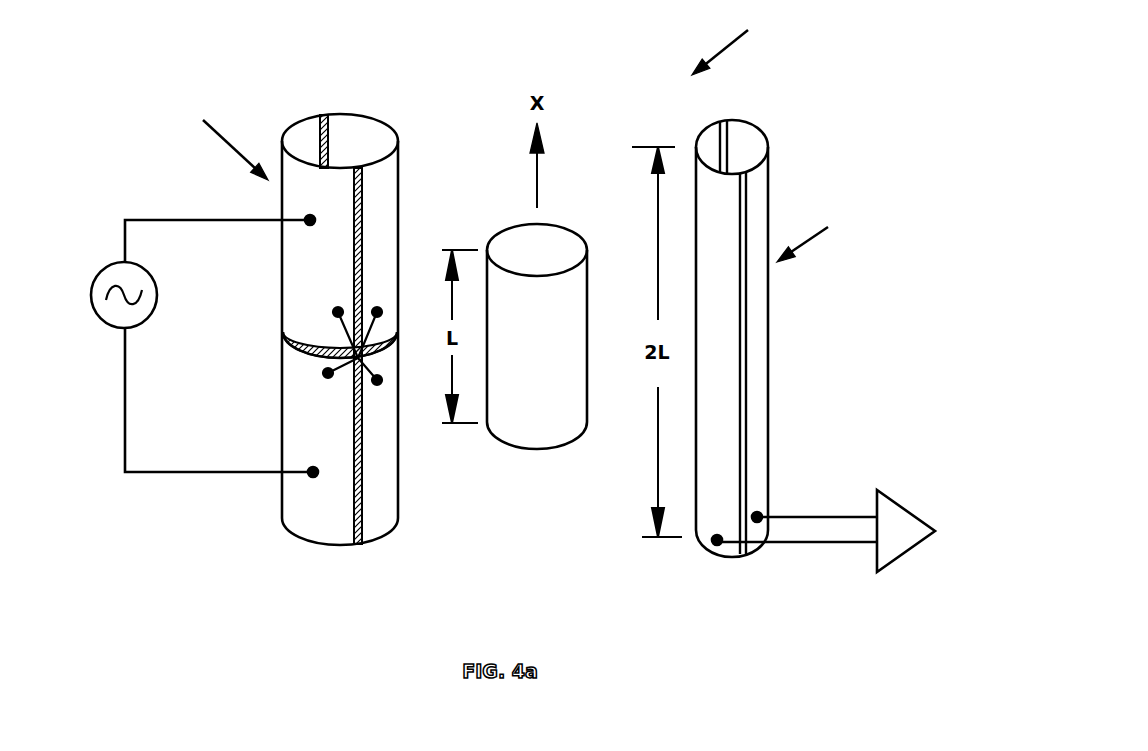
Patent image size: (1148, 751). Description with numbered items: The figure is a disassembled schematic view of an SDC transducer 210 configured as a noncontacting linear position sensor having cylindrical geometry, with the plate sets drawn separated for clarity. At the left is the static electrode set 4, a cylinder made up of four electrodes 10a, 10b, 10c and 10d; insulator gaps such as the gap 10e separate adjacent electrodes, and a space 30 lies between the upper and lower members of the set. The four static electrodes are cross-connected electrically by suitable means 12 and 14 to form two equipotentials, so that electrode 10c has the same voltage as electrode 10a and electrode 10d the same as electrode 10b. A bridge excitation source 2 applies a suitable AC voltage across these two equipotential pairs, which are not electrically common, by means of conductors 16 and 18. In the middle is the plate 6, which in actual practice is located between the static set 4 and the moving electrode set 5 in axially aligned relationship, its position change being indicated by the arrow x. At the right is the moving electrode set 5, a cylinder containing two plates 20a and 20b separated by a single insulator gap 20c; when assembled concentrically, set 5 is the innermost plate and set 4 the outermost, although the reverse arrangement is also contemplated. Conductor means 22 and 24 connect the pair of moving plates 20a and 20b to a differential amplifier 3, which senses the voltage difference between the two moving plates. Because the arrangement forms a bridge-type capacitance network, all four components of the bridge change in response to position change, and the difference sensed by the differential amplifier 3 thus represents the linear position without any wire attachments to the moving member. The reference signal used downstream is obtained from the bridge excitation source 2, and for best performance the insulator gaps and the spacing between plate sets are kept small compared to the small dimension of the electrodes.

The SDC transducer 210 is at (746, 39).
The static electrode set 4 is at (224, 138).
The rectangular element 10a is at (340, 238).
The rectangular element 10b is at (340, 440).
The rectangular element 10c is at (380, 460).
The rectangular element 10d is at (340, 141).
The insulator gap 10e is at (321, 115).
The space between upper and lower members 30 is at (284, 340).
The cross-connecting means 12 is at (308, 356).
The cross-connecting means 14 is at (393, 334).
The conductor 18 is at (213, 218).
The conductor 16 is at (207, 473).
The bridge excitation source 2 is at (147, 322).
The plate 6 is at (537, 336).
The moving electrode set 5 is at (811, 234).
The rectangular element 20a is at (732, 338).
The rectangular element 20b is at (758, 370).
The insulator gap 20c is at (742, 217).
The conductor means 24 is at (805, 513).
The conductor means 22 is at (797, 545).
The differential amplifier 3 is at (906, 531).